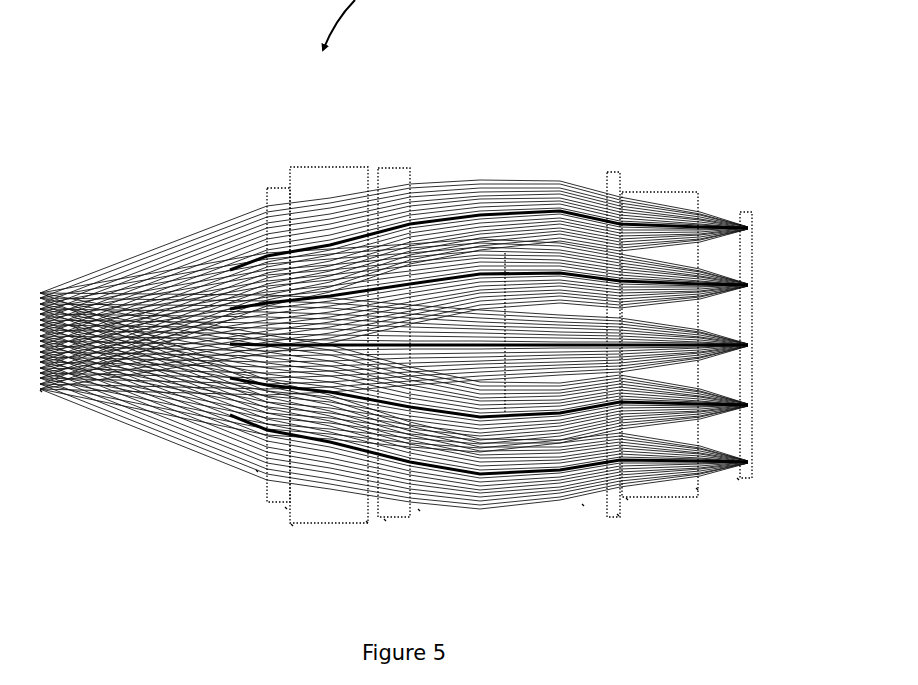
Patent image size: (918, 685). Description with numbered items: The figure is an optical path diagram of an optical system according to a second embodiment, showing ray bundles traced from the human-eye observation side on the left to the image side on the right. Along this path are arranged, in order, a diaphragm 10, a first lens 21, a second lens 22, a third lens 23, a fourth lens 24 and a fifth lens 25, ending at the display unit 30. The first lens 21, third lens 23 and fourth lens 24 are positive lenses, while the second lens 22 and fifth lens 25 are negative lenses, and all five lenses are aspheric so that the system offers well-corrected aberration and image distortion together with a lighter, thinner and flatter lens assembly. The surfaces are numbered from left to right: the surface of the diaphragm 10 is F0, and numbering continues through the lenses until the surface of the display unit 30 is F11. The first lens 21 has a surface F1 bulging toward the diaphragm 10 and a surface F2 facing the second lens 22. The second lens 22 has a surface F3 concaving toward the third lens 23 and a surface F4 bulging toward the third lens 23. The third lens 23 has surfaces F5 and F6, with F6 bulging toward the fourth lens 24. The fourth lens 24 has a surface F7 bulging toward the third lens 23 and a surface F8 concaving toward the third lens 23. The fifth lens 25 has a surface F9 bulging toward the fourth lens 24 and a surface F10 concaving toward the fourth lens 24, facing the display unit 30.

The diaphragm 10 is at (40, 297).
The first lens 21 is at (272, 193).
The second lens 22 is at (338, 167).
The third lens 23 is at (390, 170).
The fourth lens 24 is at (598, 177).
The fifth lens 25 is at (648, 190).
The display unit 30 is at (738, 208).
The surface of the diaphragm F0 is at (41, 393).
The surface of the first lens F1 is at (256, 470).
The surface of the first lens F2 is at (285, 507).
The surface of the second lens F3 is at (291, 524).
The surface of the second lens F4 is at (366, 521).
The surface of the third lens F5 is at (384, 519).
The surface of the third lens F6 is at (418, 509).
The surface of the fourth lens F7 is at (582, 504).
The surface of the fourth lens F8 is at (617, 514).
The surface of the fifth lens F9 is at (626, 498).
The surface of the fifth lens F10 is at (696, 488).
The surface of the display unit F11 is at (737, 478).